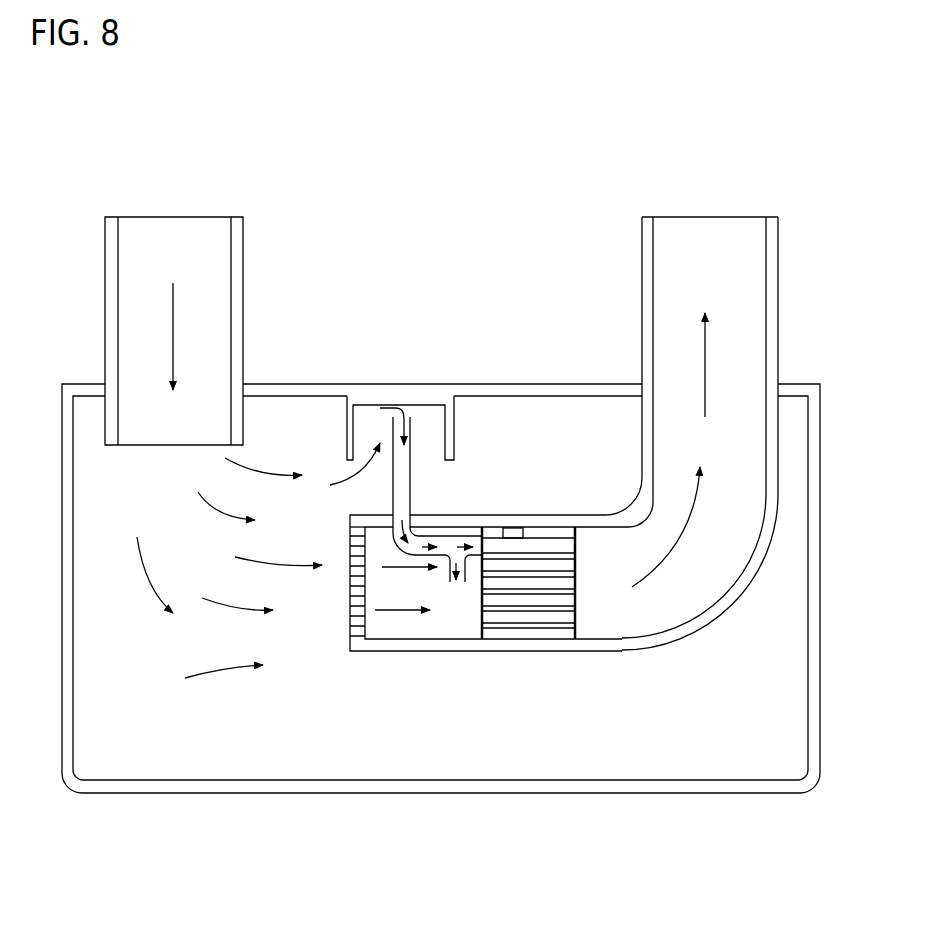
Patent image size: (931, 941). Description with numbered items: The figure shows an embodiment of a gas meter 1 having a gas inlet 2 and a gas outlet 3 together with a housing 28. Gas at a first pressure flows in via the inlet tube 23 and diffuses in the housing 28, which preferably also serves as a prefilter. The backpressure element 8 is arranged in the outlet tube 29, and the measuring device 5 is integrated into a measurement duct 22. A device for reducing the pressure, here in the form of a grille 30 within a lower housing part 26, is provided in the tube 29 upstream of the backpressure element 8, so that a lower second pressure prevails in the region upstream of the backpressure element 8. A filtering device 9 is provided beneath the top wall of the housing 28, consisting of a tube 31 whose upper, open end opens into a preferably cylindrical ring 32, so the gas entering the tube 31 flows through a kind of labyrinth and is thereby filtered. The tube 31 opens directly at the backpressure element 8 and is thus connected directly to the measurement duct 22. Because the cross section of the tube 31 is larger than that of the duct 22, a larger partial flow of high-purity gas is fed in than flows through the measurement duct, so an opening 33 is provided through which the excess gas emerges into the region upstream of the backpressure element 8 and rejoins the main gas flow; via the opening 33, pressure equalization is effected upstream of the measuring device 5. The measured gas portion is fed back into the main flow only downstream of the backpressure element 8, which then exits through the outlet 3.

The fuel supply device 1 is at (392, 155).
The gas inlet 2 is at (225, 290).
The gas outlet 3 is at (675, 393).
The measuring device 5 is at (513, 527).
The backpressure element 8 is at (517, 632).
The filtering device 9 is at (412, 380).
The measurement duct 22 is at (552, 546).
The inlet tube 23 is at (243, 292).
The housing part 26 is at (361, 657).
The housing 28 is at (558, 383).
The outlet tube 29 is at (641, 287).
The grille 30 is at (348, 537).
The filter tube 31 is at (420, 501).
The cylindrical ring 32 is at (345, 417).
The opening 33 is at (460, 587).